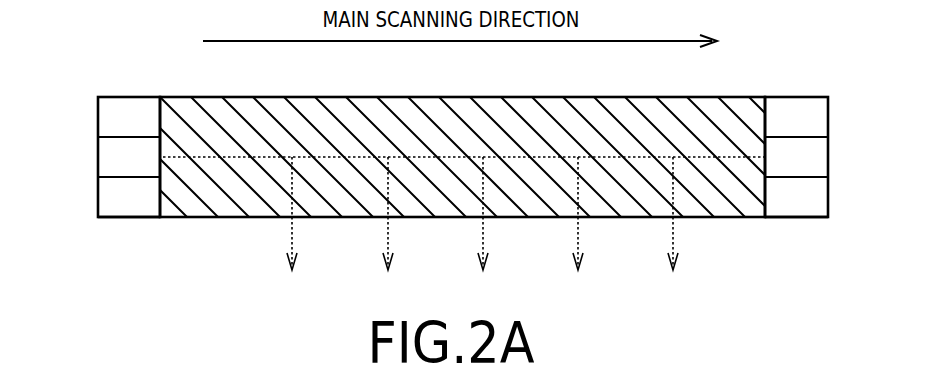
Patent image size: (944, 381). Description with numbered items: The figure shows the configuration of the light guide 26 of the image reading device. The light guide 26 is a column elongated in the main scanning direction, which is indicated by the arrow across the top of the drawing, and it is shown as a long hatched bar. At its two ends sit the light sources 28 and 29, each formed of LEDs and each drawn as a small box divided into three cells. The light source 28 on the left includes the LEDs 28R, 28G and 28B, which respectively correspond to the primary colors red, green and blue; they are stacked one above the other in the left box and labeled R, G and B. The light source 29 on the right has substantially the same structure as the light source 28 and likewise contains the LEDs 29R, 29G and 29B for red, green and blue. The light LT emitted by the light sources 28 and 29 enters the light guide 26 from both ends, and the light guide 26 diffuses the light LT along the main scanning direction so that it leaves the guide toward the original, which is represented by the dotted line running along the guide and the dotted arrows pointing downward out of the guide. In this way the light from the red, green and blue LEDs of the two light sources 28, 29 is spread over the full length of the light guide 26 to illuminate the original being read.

The light guide 26 is at (611, 103).
The light source 28 is at (124, 98).
The LED 28R is at (110, 119).
The LED 28G is at (108, 160).
The LED 28B is at (108, 202).
The light source 29 is at (793, 97).
The LED 29R is at (818, 112).
The LED 29G is at (818, 157).
The LED 29B is at (818, 197).
The light LT is at (677, 202).